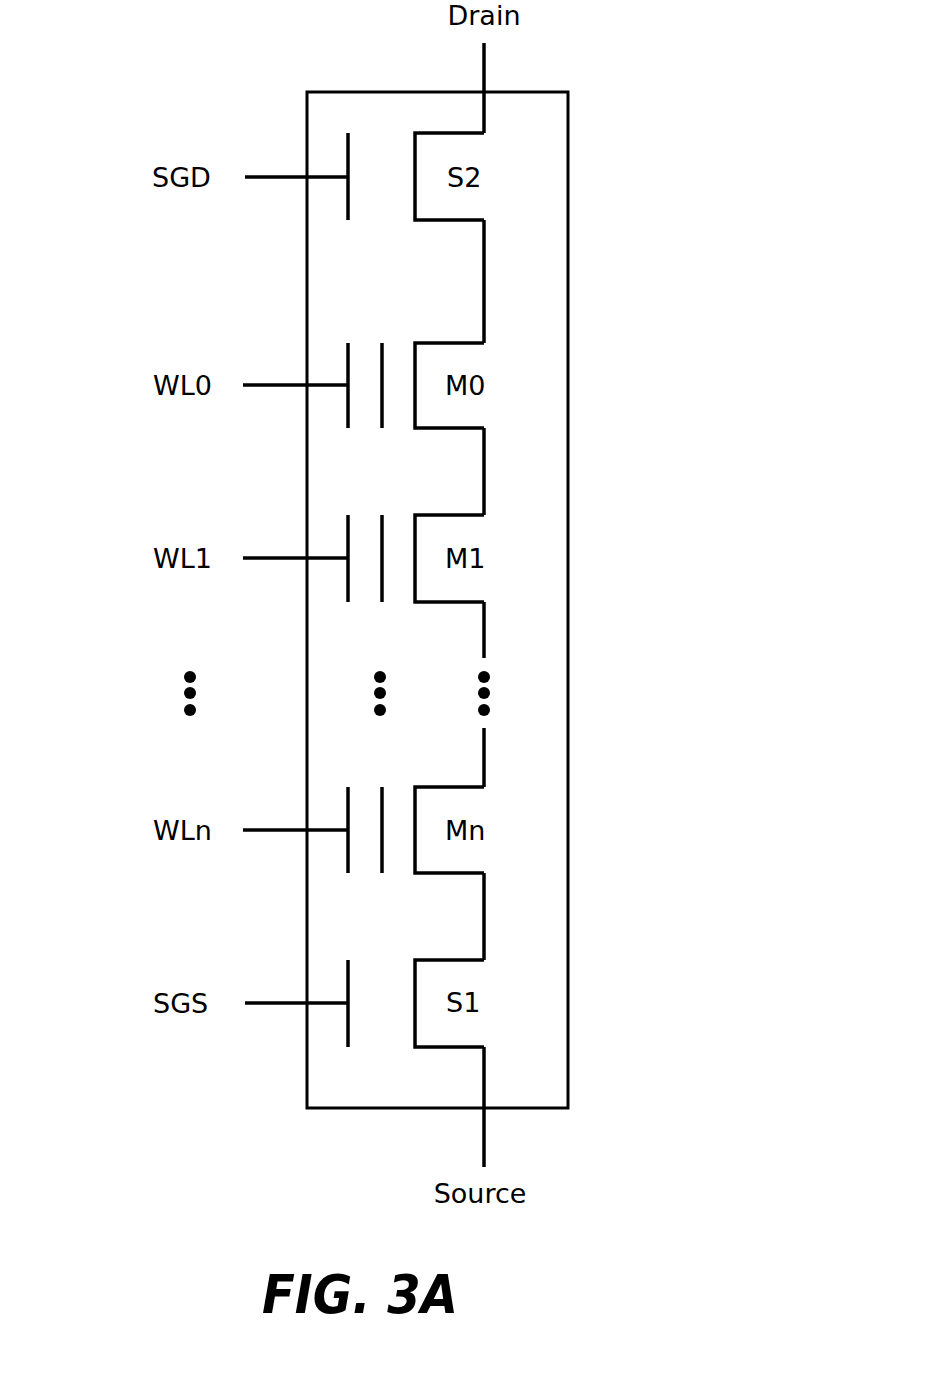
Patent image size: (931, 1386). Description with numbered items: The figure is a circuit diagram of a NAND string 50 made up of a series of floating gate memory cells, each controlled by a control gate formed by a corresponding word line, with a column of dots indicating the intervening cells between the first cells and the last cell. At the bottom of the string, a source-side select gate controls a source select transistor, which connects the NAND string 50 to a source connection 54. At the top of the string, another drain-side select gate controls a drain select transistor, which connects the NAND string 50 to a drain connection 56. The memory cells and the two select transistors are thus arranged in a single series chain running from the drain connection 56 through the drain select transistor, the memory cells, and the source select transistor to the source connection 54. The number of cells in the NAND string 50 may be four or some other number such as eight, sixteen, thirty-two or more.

The NAND string 50 is at (307, 128).
The source connection 54 is at (486, 1133).
The drain connection 56 is at (486, 72).